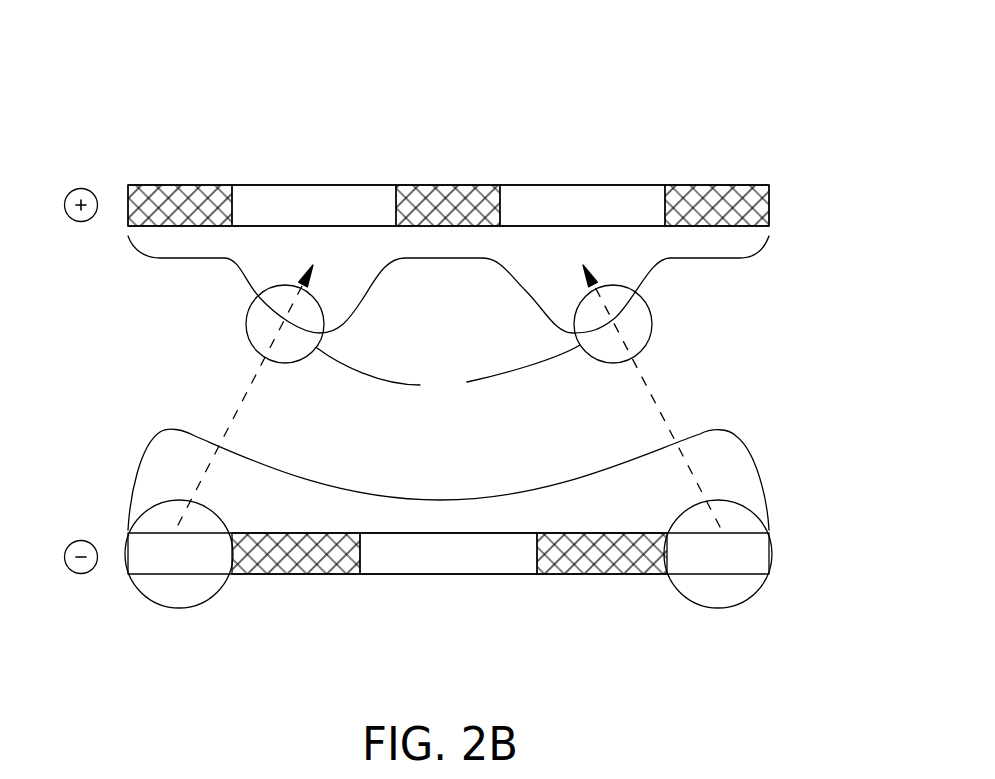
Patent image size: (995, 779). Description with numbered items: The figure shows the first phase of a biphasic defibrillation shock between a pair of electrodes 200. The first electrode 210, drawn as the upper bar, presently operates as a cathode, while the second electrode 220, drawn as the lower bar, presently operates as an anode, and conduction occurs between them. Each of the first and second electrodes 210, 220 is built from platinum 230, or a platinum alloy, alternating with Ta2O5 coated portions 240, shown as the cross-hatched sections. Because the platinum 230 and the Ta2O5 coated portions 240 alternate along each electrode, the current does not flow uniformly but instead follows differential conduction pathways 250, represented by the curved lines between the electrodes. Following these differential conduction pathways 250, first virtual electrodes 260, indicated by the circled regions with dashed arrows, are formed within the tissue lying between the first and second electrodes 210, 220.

The pair of electrodes 200 is at (547, 57).
The first electrode 210 is at (772, 208).
The second electrode 220 is at (772, 563).
The platinum 230 is at (347, 185).
The Ta2O5 coated portions 240 is at (222, 185).
The differential conduction pathways 250 is at (240, 280).
The first virtual electrodes 260 is at (448, 370).